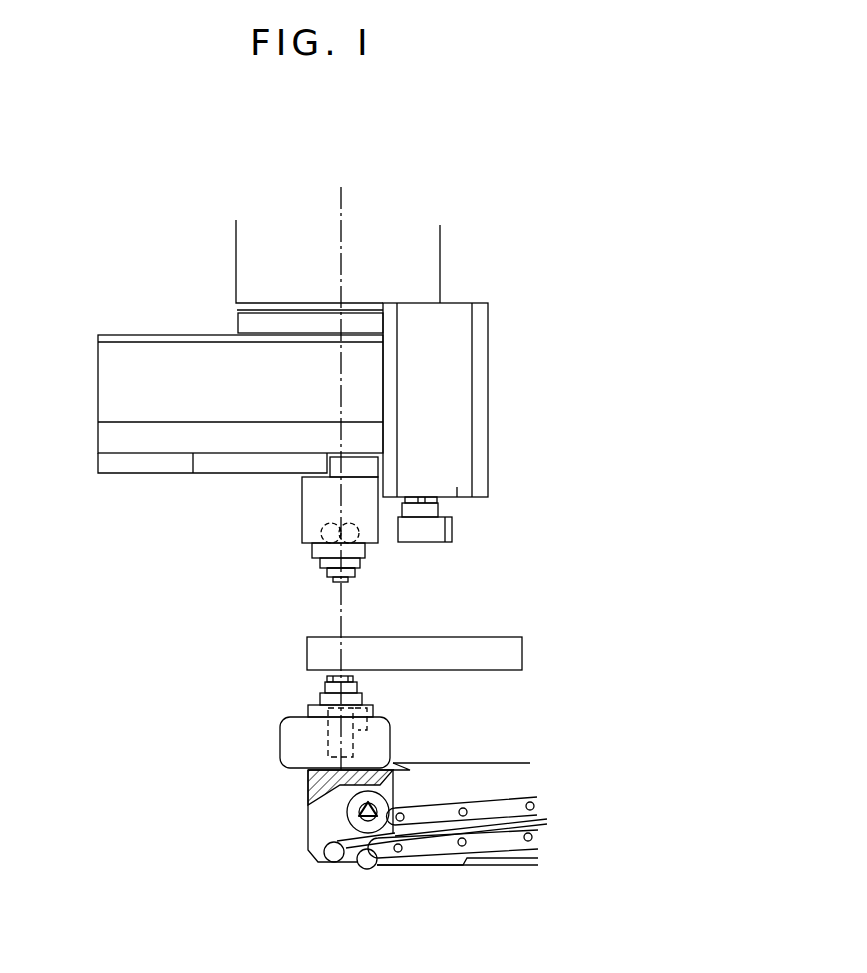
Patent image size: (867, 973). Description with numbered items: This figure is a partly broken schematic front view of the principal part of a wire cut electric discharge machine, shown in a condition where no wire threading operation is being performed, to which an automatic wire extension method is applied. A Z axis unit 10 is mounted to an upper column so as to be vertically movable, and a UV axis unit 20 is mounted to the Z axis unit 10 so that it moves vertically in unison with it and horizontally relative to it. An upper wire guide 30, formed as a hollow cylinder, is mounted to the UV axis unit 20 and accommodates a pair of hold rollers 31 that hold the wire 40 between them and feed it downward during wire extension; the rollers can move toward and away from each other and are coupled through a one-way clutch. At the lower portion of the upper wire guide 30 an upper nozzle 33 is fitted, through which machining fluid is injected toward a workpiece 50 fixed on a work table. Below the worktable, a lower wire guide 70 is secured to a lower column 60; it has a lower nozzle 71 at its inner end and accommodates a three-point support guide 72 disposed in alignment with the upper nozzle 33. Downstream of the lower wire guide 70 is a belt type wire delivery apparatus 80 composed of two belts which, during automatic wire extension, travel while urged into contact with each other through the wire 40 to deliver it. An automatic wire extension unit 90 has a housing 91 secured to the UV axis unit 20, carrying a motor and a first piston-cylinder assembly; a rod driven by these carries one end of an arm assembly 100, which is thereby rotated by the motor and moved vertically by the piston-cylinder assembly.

The Z axis unit 10 is at (236, 251).
The UV axis unit 20 is at (108, 390).
The upper wire guide 30 is at (283, 515).
The hold rollers 31 is at (298, 537).
The upper nozzle 33 is at (320, 565).
The wire 40 is at (350, 212).
The workpiece 50 is at (497, 650).
The lower column 60 is at (515, 765).
The lower wire guide 70 is at (265, 758).
The lower nozzle 71 is at (325, 687).
The three-point support guide 72 is at (328, 737).
The belt type wire delivery apparatus 80 is at (438, 873).
The automatic wire extension unit 90 is at (502, 325).
The housing 91 is at (457, 487).
The arm assembly 100 is at (423, 532).